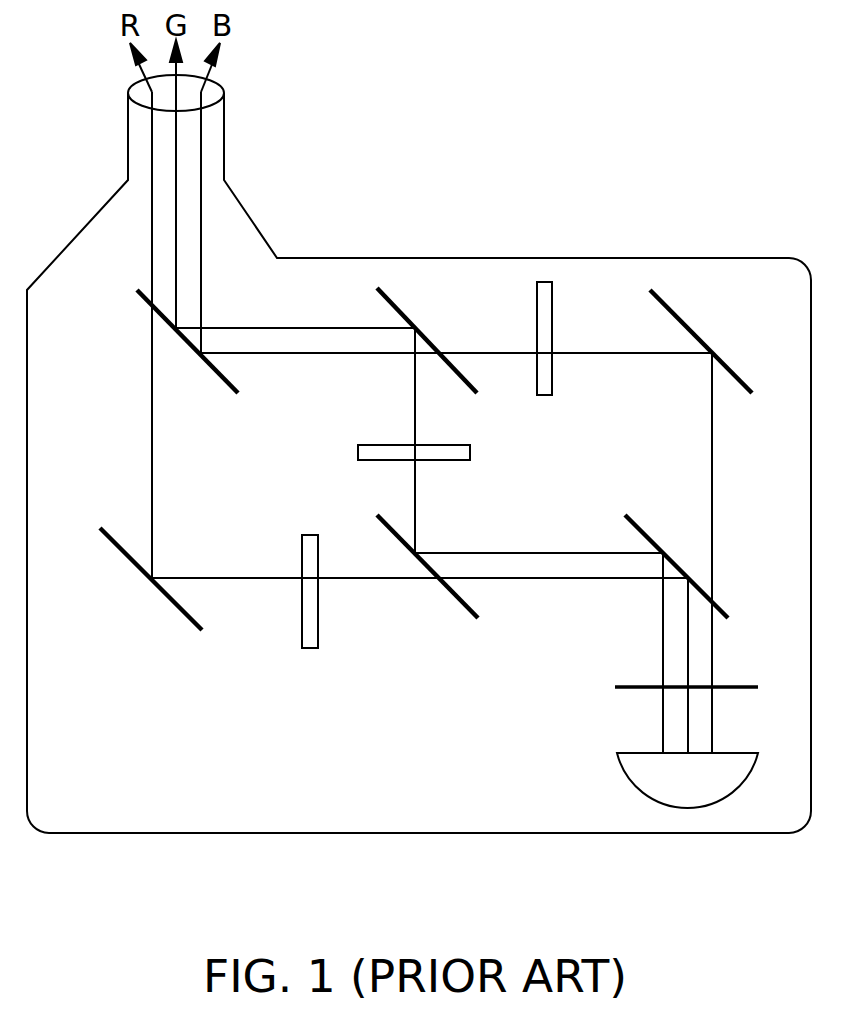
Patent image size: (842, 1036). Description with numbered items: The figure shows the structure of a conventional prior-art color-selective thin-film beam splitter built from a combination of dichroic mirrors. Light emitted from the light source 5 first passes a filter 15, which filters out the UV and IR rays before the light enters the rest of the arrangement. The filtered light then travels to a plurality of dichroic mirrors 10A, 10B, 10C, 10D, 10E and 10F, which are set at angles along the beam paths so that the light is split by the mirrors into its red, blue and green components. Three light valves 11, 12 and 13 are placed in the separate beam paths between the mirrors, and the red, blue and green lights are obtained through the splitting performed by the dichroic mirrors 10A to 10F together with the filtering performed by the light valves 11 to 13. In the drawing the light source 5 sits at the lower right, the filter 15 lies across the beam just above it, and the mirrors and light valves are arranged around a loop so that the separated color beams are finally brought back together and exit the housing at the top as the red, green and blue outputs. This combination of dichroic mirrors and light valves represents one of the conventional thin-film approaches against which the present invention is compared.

The dichroic mirror 10A is at (143, 291).
The dichroic mirror 10B is at (404, 312).
The dichroic mirror 10C is at (676, 314).
The dichroic mirror 10D is at (113, 538).
The dichroic mirror 10E is at (387, 523).
The dichroic mirror 10F is at (634, 522).
The light valve 11 is at (319, 608).
The light valve 12 is at (456, 444).
The light valve 13 is at (553, 368).
The filter 15 is at (740, 687).
The light source 5 is at (740, 753).